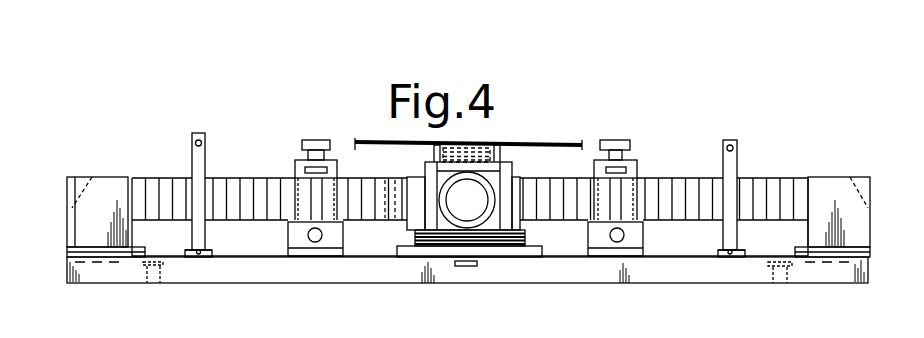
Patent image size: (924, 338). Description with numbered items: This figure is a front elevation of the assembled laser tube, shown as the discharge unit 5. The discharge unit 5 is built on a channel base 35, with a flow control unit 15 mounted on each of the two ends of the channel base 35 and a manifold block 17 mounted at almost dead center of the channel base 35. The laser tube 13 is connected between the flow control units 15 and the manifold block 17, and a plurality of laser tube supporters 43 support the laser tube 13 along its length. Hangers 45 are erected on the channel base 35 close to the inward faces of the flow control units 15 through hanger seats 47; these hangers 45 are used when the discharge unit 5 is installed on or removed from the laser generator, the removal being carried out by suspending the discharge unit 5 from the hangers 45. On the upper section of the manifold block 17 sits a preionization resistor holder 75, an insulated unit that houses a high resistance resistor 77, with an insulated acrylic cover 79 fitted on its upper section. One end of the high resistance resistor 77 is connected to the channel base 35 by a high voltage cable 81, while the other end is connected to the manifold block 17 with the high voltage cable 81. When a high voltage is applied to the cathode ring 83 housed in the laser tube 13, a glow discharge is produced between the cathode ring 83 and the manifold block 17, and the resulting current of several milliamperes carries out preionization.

The discharge unit 5 is at (704, 133).
The laser tube 13 is at (242, 179).
The flow control unit 15 is at (103, 186).
The manifold block 17 is at (445, 222).
The channel base 35 is at (302, 272).
The laser tube supporter 43 is at (302, 136).
The hanger 45 is at (205, 146).
The hanger seat 47 is at (208, 250).
The preionization resistor holder 75 is at (540, 149).
The high resistance resistor 77 is at (487, 143).
The insulated acrylic cover 79 is at (576, 143).
The high voltage cable 81 is at (514, 176).
The cathode ring 83 is at (390, 190).